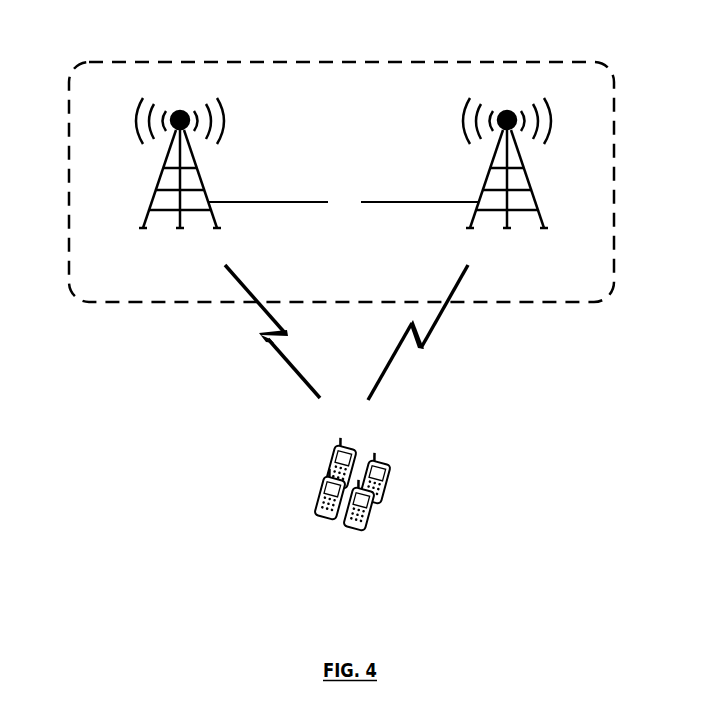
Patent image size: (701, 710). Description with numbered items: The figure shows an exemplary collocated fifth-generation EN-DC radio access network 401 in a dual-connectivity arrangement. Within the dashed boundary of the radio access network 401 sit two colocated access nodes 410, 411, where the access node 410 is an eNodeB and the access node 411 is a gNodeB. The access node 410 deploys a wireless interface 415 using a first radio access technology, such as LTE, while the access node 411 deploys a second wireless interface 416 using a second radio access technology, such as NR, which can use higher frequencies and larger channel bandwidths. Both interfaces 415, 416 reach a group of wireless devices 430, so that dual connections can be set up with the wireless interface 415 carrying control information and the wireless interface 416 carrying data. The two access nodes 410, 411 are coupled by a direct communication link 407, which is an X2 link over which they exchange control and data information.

The radio access network 401 is at (143, 62).
The direct communication link 407 is at (408, 201).
The access node 410 is at (160, 193).
The access node 411 is at (525, 193).
The wireless interface 415 is at (261, 334).
The wireless interface 416 is at (426, 338).
The wireless devices 430 is at (390, 546).